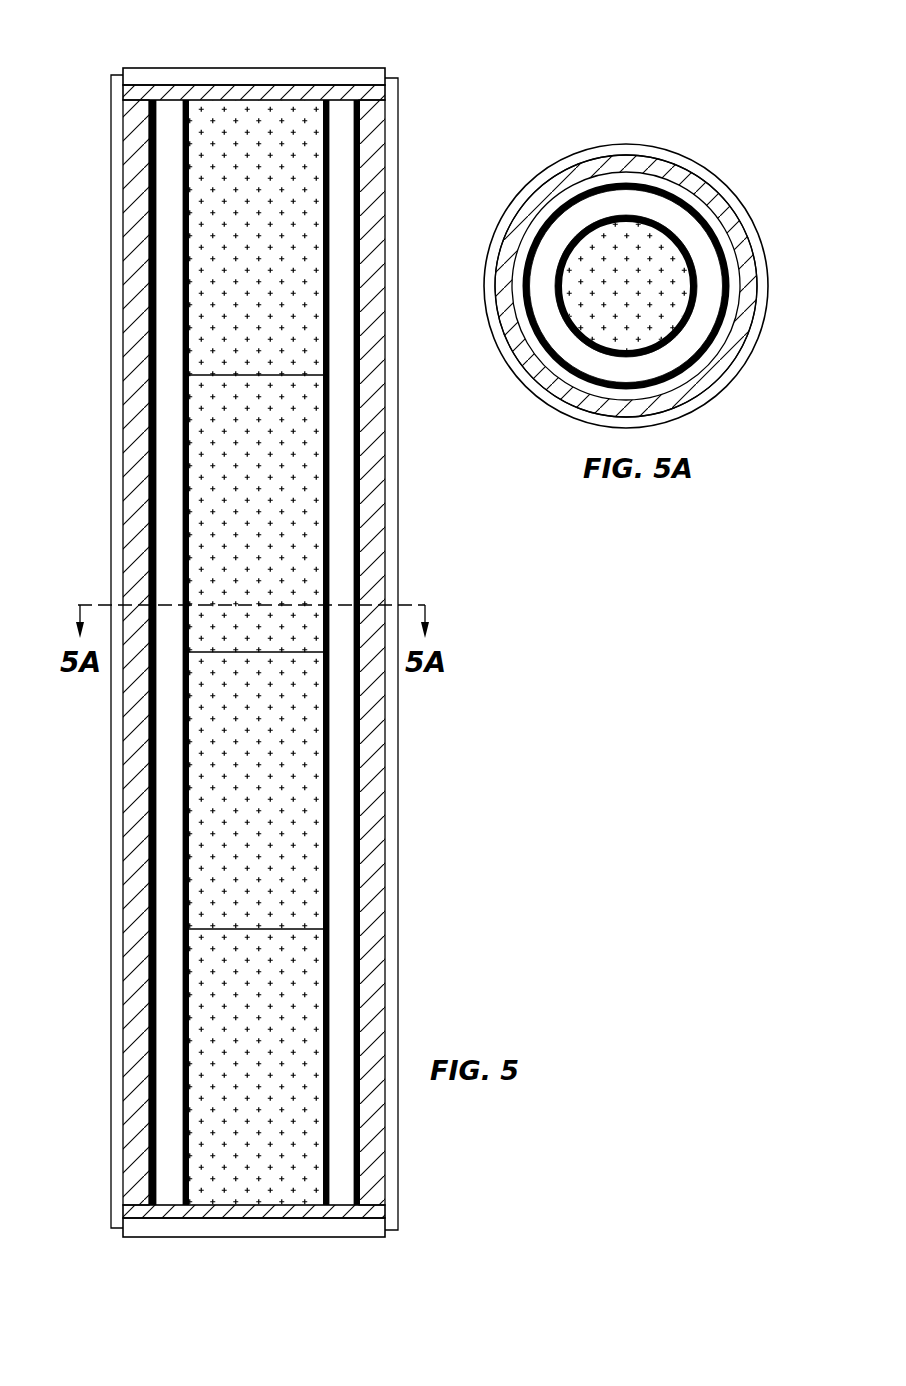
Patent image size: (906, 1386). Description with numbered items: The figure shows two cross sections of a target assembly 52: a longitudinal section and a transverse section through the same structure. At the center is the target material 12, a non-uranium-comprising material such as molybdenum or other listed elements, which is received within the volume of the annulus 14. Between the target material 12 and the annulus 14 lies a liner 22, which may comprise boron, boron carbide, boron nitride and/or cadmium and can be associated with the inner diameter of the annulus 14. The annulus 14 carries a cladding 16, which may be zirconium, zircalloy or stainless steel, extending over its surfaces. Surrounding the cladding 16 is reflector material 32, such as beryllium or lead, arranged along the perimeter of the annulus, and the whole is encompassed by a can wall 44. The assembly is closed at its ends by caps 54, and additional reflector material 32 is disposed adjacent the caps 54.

In FIG. 5, the target material 12 is at (263, 133).
In FIG. 5A, the target material 12 is at (667, 263).
In FIG. 5, the annulus 14 is at (173, 257).
In FIG. 5A, the annulus 14 is at (648, 205).
In FIG. 5, the cladding 16 is at (150, 307).
In FIG. 5A, the cladding 16 is at (628, 185).
In FIG. 5, the liner 22 is at (187, 203).
In FIG. 5A, the liner 22 is at (698, 199).
In FIG. 5, the reflector material 32 is at (137, 373).
In FIG. 5A, the reflector material 32 is at (596, 172).
In FIG. 5, the can wall 44 is at (117, 477).
In FIG. 5A, the can wall 44 is at (552, 173).
In FIG. 5, the target assembly 52 is at (86, 153).
In FIG. 5A, the target assembly 52 is at (748, 400).
In FIG. 5, the caps 54 is at (250, 77).